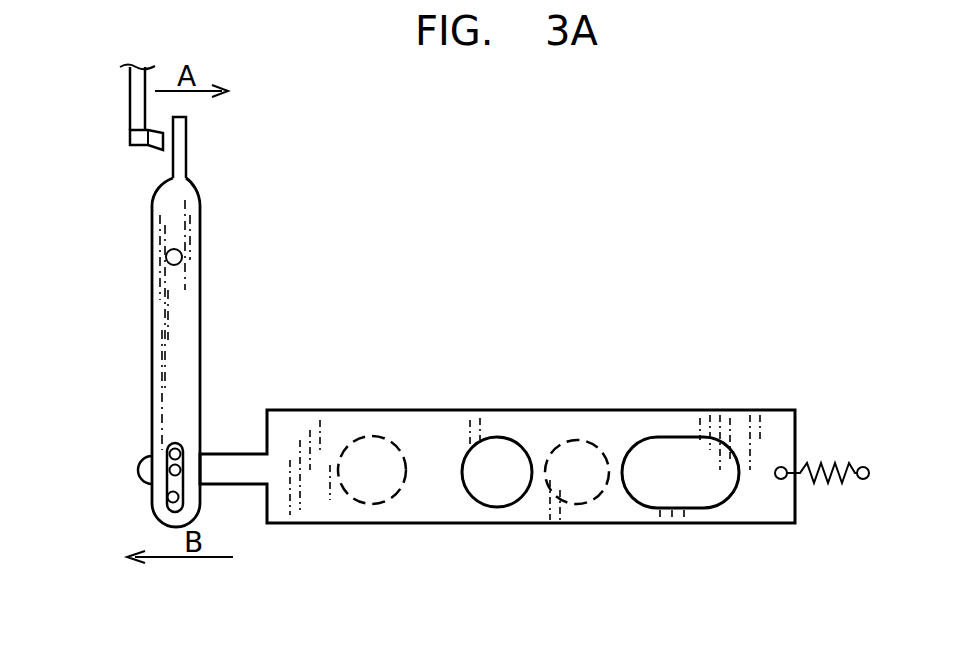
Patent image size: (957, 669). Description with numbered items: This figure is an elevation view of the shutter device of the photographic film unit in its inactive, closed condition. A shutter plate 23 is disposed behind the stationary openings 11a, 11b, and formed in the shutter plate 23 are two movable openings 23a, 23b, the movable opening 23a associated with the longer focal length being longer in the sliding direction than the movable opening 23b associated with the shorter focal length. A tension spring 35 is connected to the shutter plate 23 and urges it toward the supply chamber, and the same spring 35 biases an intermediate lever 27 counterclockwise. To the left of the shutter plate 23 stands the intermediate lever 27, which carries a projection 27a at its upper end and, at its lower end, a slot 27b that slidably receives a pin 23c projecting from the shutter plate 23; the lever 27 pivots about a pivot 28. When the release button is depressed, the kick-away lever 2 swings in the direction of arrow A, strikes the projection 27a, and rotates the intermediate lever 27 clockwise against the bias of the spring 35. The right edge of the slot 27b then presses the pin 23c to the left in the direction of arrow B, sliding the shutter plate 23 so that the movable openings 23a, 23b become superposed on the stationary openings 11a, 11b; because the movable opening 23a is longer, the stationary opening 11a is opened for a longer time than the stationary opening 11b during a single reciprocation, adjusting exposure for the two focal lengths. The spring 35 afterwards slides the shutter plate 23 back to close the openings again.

The kick-away lever 2 is at (134, 93).
The projection 27a is at (181, 145).
The intermediate lever 27 is at (190, 322).
The pivot pin 28 is at (182, 257).
The pin 23c is at (178, 450).
The slot 27b is at (170, 501).
The shutter plate 23 is at (440, 513).
The stationary opening 11b is at (374, 440).
The movable opening 23b is at (520, 456).
The stationary opening 11a is at (575, 448).
The movable opening 23a is at (686, 446).
The tension spring 35 is at (826, 482).